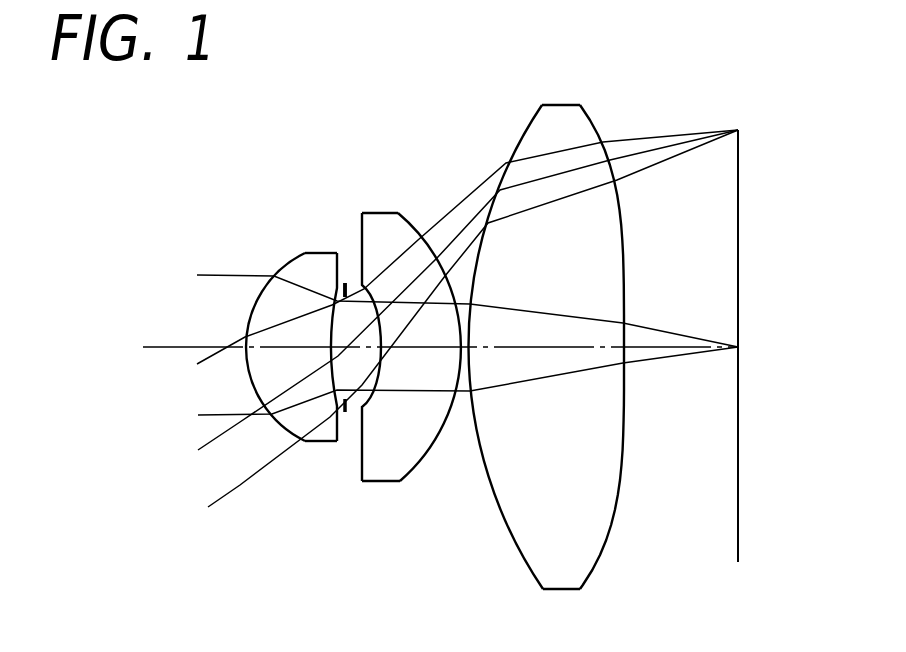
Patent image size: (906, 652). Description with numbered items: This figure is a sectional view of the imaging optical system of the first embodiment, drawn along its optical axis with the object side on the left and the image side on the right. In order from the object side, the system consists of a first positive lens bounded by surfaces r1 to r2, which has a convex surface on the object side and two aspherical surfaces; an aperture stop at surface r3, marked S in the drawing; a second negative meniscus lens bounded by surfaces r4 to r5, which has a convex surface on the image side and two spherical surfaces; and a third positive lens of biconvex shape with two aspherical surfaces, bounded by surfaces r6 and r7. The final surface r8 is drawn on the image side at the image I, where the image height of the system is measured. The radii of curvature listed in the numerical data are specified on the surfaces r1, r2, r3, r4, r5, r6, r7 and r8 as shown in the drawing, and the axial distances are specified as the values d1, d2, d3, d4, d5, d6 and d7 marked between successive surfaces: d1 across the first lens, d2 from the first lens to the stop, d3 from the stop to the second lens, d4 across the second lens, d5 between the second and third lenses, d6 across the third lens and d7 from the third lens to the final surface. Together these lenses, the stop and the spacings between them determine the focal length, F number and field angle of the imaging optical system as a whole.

The object-side surface of first positive lens r1 is at (281, 269).
The image-side surface of first positive lens r2 is at (330, 311).
The aperture stop surface r3 is at (347, 290).
The object-side surface of second negative meniscus lens r4 is at (362, 283).
The image-side surface of second negative meniscus lens r5 is at (404, 212).
The lens surface r6 is at (528, 130).
The lens surface r7 is at (591, 122).
The surface r8 is at (742, 157).
The airspace d1 is at (272, 356).
The airspace d2 is at (333, 373).
The airspace d3 is at (360, 391).
The airspace d4 is at (420, 350).
The airspace d5 is at (465, 352).
The airspace d6 is at (547, 347).
The airspace d7 is at (672, 347).
The aperture stop S is at (353, 404).
The image plane I is at (742, 498).